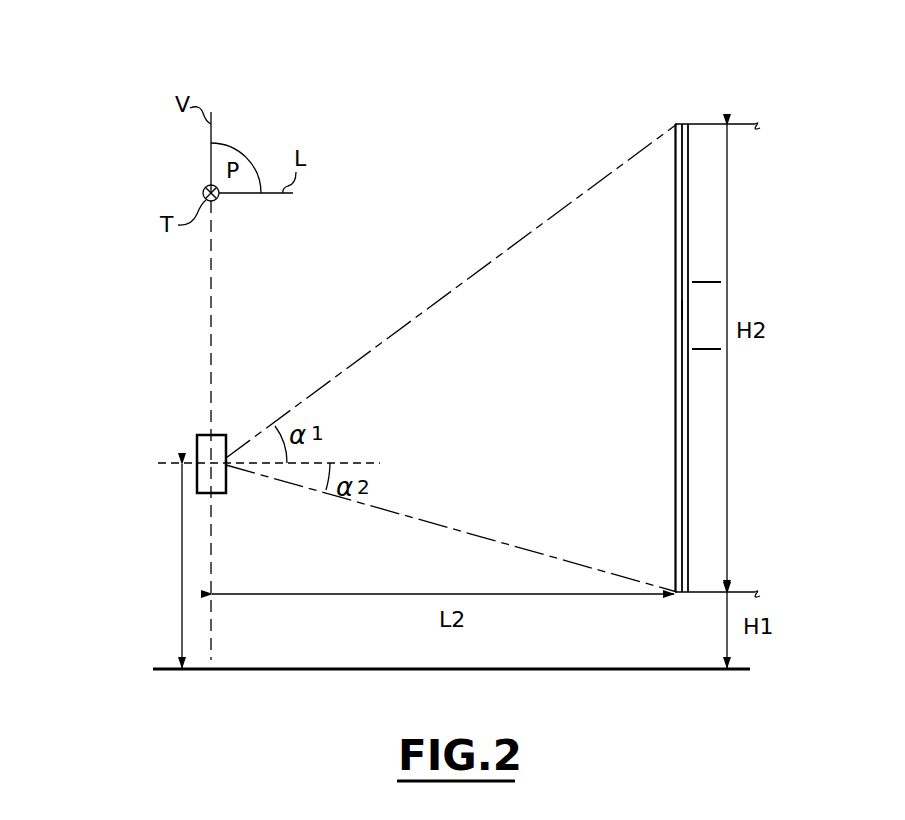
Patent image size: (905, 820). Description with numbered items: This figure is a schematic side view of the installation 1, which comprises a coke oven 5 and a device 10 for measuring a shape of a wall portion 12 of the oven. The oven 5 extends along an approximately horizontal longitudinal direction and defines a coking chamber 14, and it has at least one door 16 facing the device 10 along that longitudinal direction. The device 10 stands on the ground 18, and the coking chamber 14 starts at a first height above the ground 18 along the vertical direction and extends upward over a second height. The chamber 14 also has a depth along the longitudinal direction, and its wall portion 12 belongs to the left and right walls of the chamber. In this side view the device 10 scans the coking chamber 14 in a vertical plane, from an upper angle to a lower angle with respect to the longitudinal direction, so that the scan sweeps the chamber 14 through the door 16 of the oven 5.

The installation 1 is at (806, 238).
The coke oven 5 is at (710, 113).
The device for measuring a shape of a wall portion 10 is at (155, 441).
The wall portion 12 is at (707, 265).
The coking chamber 14 is at (707, 333).
The door 16 is at (683, 310).
The ground 18 is at (322, 666).